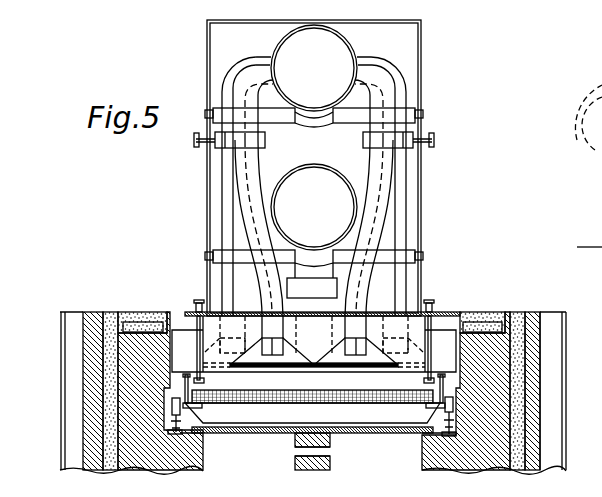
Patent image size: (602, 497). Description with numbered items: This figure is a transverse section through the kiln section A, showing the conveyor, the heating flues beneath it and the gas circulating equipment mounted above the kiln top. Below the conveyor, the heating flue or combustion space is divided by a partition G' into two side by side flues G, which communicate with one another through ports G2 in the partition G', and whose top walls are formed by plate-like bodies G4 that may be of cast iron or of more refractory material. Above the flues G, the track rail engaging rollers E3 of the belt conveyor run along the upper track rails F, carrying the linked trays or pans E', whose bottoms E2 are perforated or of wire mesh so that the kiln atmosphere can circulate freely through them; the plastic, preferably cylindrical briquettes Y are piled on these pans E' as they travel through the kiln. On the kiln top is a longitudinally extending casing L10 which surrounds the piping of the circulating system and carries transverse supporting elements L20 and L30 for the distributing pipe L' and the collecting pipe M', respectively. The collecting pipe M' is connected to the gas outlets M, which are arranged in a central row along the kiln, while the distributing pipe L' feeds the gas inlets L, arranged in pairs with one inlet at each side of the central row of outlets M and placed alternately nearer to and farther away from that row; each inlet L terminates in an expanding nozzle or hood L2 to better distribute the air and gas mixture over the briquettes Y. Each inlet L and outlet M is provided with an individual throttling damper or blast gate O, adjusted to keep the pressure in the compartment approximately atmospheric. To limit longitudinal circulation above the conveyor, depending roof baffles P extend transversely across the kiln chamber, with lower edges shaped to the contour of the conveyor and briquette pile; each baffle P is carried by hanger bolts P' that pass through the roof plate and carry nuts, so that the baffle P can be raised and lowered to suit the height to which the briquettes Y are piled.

The casing L10 is at (421, 56).
The distributing pipe L' is at (314, 68).
The collecting pipe M' is at (314, 207).
The gas inlets L is at (313, 206).
The transverse supporting element L20 is at (420, 111).
The transverse supporting element L30 is at (420, 249).
The gas outlets M is at (374, 280).
The throttling damper or blast gate O is at (233, 137).
The roof baffle P is at (336, 304).
The hanger bolt P' is at (307, 297).
The tray or pan E' is at (314, 349).
The expanding nozzle or hood L2 is at (288, 372).
The track rail engaging roller E3 is at (436, 401).
The briquettes Y is at (445, 394).
The upper track rail F is at (180, 415).
The pan bottom E2 is at (381, 406).
The flue or chamber G is at (312, 393).
The kiln section A is at (500, 426).
The plate-like body G4 is at (246, 430).
The partition G' is at (286, 454).
The port G2 is at (330, 452).